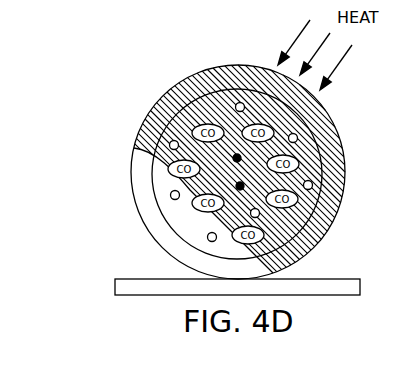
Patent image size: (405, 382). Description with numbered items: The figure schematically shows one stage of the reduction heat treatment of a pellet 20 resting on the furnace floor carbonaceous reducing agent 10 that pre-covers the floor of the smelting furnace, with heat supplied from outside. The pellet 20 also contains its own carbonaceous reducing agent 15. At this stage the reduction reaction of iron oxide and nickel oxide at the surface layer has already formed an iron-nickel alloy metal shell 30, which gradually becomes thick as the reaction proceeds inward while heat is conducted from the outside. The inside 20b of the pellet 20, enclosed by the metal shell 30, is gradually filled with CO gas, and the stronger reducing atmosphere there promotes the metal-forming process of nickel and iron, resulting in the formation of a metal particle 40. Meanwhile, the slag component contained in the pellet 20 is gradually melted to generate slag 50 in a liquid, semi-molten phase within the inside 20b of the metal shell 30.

The furnace floor carbonaceous reducing agent 10 is at (330, 290).
The carbonaceous reducing agent 15 is at (234, 161).
The pellet 20 is at (160, 56).
The inside of the pellet 20b is at (218, 104).
The metal shell 30 is at (326, 134).
The metal particle 40 is at (169, 142).
The slag 50 is at (290, 229).